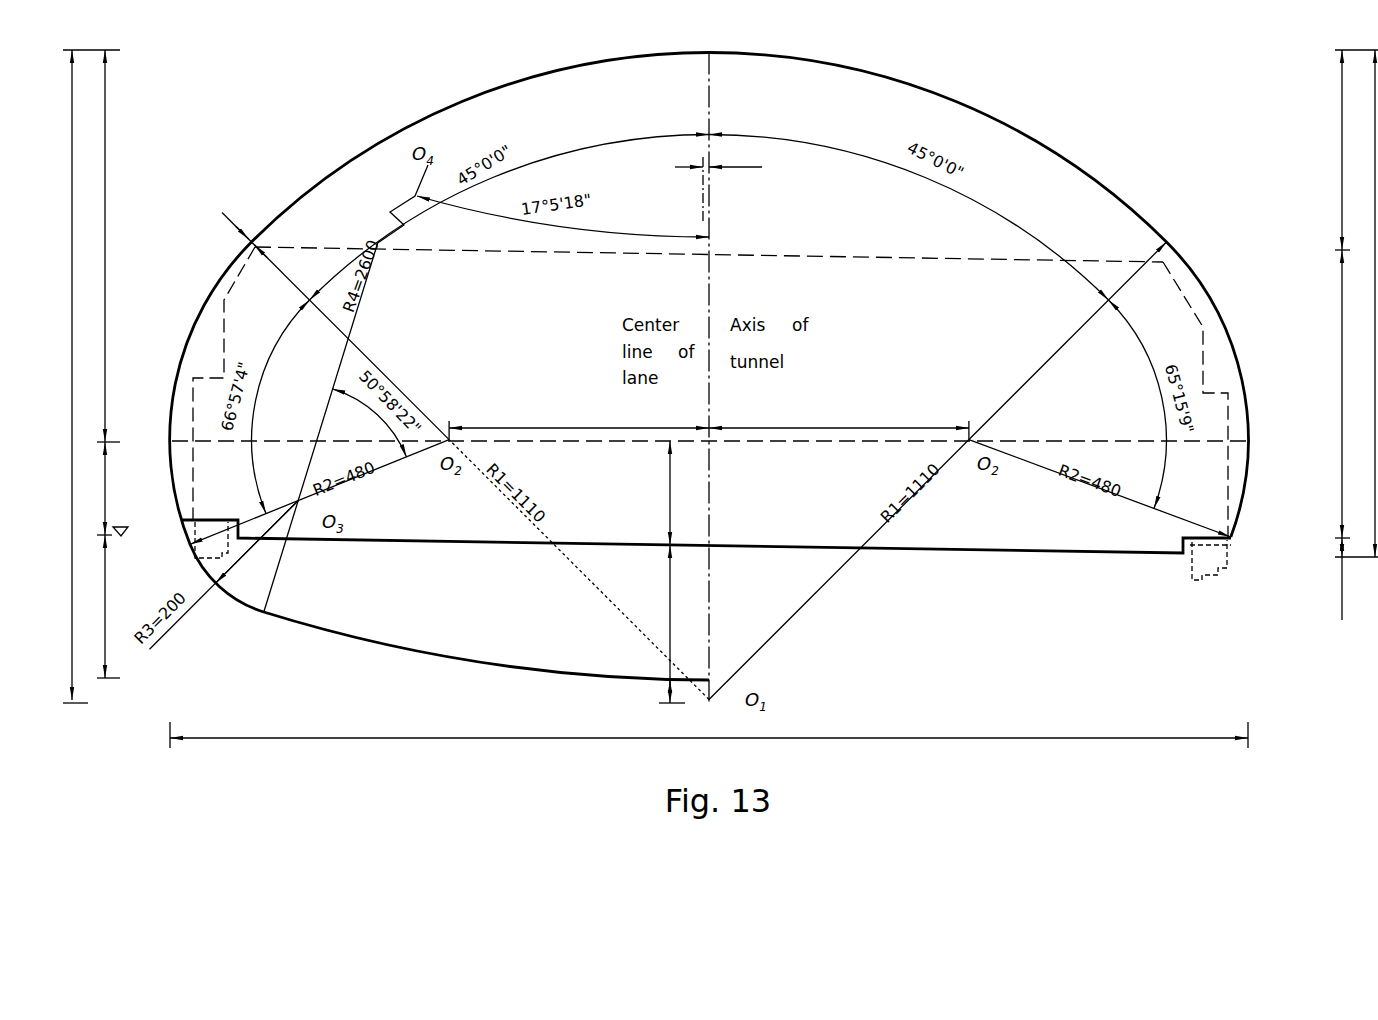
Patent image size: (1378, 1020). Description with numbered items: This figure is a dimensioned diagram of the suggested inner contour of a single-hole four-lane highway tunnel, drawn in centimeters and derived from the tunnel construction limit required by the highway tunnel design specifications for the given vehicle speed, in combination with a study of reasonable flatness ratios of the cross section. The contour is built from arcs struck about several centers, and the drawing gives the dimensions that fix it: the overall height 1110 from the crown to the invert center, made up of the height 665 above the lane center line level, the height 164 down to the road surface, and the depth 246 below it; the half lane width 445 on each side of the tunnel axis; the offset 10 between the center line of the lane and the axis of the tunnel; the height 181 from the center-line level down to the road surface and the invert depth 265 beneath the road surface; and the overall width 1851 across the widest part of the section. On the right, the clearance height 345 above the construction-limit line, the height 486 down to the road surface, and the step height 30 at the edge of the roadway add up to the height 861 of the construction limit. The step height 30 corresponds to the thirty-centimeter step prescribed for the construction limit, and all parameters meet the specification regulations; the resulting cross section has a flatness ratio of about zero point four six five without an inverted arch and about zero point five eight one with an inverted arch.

The offset dimension 10 is at (491, 202).
The half lane width dimension 445 is at (709, 424).
The height dimension 181 is at (658, 493).
The invert depth dimension 265 is at (666, 624).
The overall height dimension 1110 is at (81, 376).
The height dimension 665 is at (99, 246).
The height dimension 164 is at (103, 489).
The height dimension 246 is at (99, 606).
The height dimension 345 is at (1345, 150).
The height dimension 486 is at (1331, 394).
The step height 30 is at (1345, 579).
The height dimension 861 is at (1360, 303).
The overall width dimension 1851 is at (709, 732).